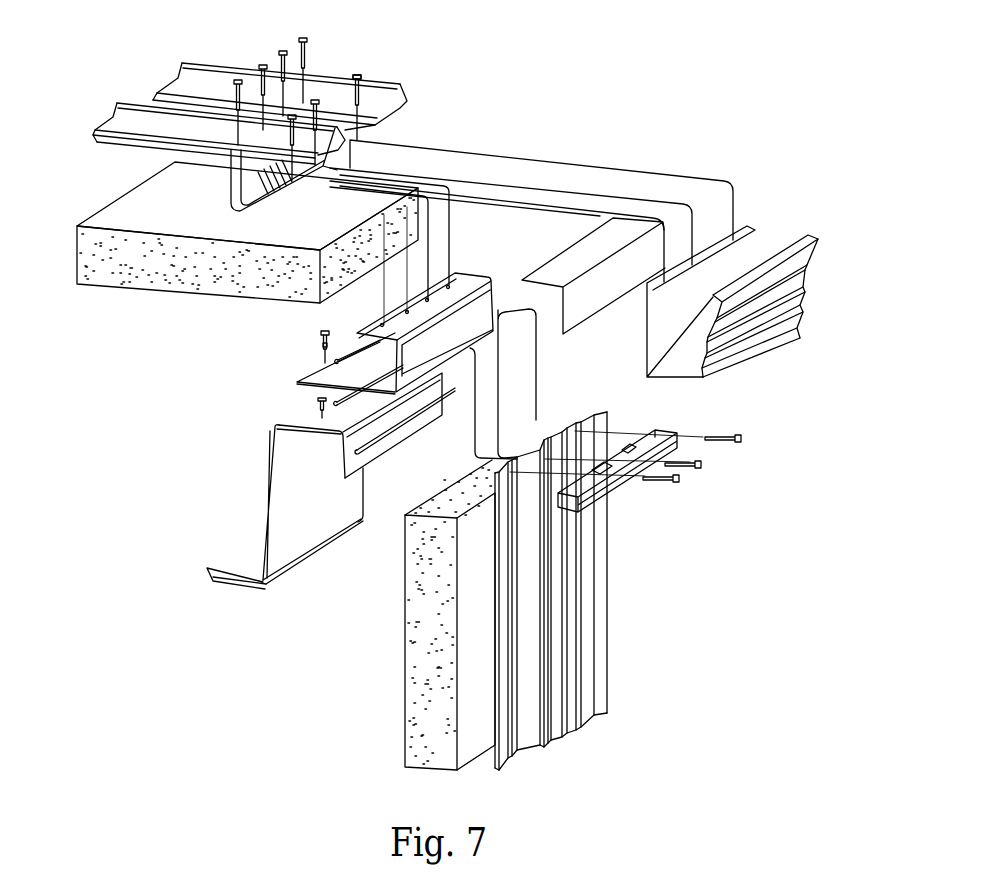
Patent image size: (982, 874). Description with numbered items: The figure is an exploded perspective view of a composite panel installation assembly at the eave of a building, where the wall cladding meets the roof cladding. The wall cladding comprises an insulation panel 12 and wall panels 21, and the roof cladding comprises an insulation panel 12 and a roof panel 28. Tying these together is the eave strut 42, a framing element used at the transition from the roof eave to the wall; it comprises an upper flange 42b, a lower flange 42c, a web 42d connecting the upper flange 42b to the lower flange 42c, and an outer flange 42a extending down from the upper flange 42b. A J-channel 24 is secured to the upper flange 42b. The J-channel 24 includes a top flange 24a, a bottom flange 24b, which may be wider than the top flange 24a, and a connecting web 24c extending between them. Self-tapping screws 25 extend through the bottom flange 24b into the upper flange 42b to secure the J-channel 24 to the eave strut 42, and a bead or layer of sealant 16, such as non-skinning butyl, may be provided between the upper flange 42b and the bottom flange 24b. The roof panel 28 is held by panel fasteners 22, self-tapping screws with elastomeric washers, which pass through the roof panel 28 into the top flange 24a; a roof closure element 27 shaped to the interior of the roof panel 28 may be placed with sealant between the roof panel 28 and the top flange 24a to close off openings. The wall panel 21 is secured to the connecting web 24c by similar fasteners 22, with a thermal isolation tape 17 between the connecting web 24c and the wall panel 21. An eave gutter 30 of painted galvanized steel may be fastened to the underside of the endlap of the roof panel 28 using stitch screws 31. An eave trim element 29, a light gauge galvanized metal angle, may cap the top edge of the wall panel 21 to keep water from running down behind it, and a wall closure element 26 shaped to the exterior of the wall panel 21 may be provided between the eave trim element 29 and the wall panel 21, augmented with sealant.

The insulation panel 12 is at (124, 175).
The sealant 16 is at (322, 335).
The thermal isolation tape 17 is at (473, 303).
The wall panel 21 is at (624, 679).
The panel fasteners 22 is at (302, 38).
The J-channel 24 is at (377, 306).
The top flange 24a is at (374, 322).
The bottom flange 24b is at (310, 370).
The connecting web 24c is at (412, 346).
The self-tapping screws 25 is at (322, 333).
The wall closure element 26 is at (667, 430).
The roof closure element 27 is at (353, 145).
The roof panel 28 is at (407, 75).
The eave trim element 29 is at (585, 325).
The eave gutter 30 is at (829, 228).
The stitch screws 31 is at (358, 74).
The eave strut 42 is at (332, 495).
The outer flange 42a is at (413, 440).
The upper flange 42b is at (315, 428).
The lower flange 42c is at (245, 580).
The web 42d is at (270, 490).